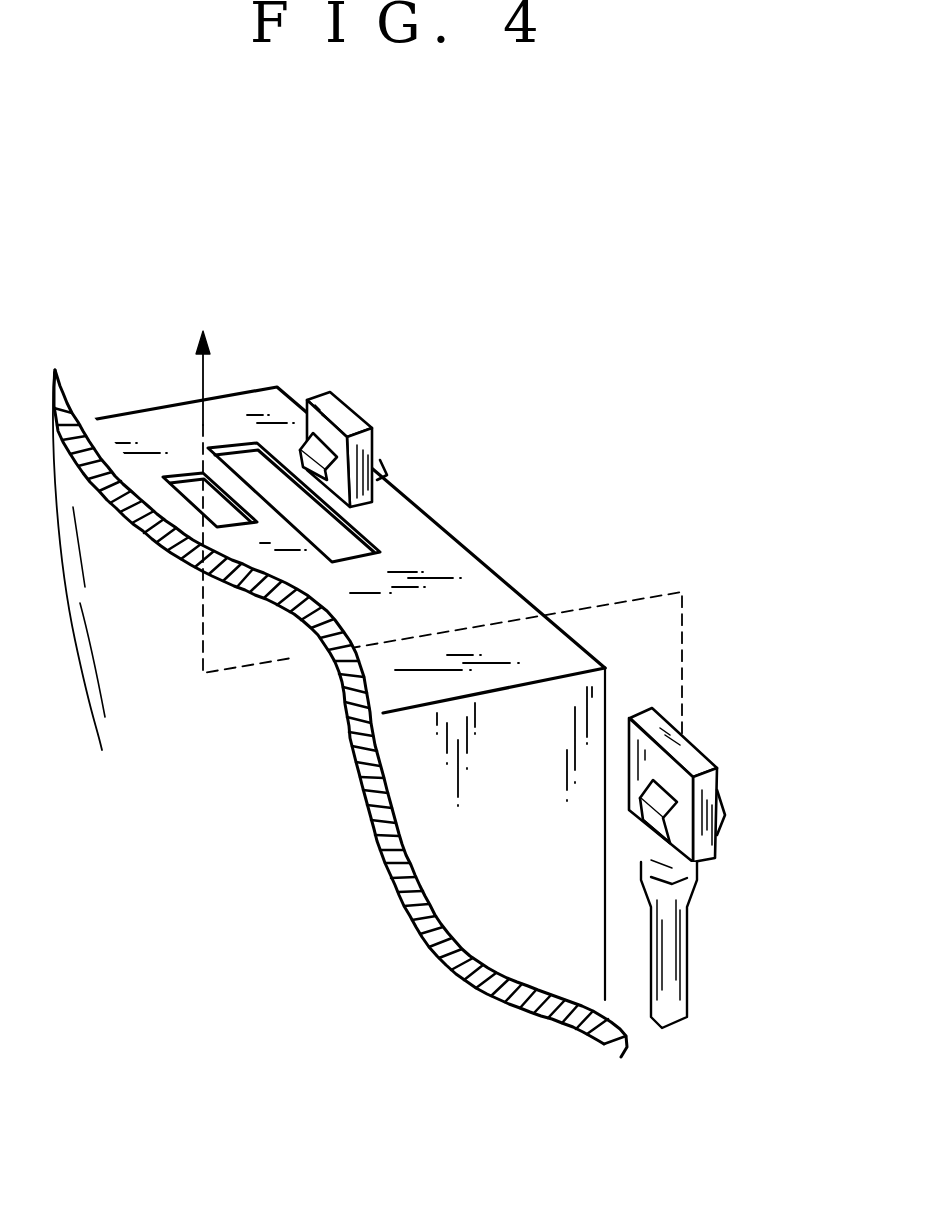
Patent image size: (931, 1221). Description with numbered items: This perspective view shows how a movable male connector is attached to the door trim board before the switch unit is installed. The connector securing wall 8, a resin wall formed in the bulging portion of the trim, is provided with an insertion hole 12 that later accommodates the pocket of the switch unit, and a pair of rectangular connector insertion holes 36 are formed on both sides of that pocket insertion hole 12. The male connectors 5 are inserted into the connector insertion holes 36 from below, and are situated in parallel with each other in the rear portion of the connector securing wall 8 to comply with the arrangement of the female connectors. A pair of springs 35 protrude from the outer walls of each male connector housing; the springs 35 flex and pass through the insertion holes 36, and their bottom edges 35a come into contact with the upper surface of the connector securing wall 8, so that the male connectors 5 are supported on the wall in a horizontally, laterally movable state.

The male connector 5 is at (357, 413).
The connector securing wall 8 is at (433, 547).
The insertion hole 12 is at (238, 477).
The spring 35 is at (652, 797).
The bottom edge 35a is at (640, 826).
The connector insertion hole 36 is at (190, 473).